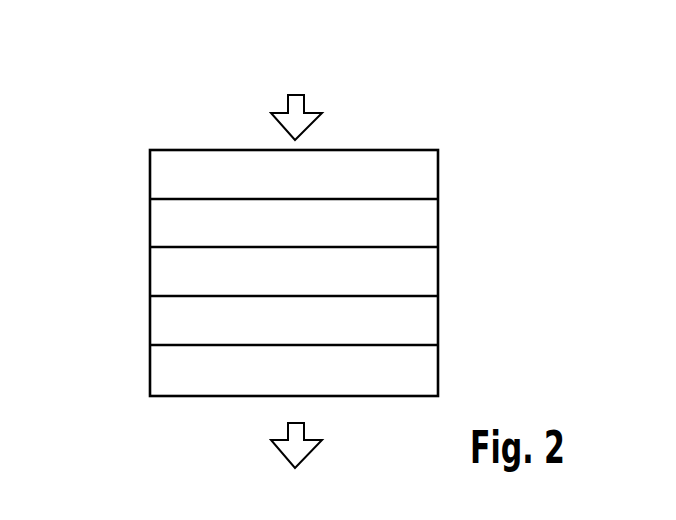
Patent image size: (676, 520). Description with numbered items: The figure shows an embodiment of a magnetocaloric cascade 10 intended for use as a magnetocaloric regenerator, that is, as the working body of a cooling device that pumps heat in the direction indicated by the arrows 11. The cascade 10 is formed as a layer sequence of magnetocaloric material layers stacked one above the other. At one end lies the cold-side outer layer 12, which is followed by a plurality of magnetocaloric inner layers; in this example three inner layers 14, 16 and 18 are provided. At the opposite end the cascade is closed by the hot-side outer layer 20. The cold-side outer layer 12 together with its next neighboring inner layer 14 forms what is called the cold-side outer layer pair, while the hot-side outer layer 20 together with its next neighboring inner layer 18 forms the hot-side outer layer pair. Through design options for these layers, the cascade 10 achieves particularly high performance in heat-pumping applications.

The magnetocaloric cascade 10 is at (438, 126).
The arrows 11 is at (304, 104).
The cold-side outer layer 12 is at (150, 174).
The inner layer 14 is at (150, 224).
The inner layer 16 is at (150, 276).
The inner layer 18 is at (150, 330).
The hot-side outer layer 20 is at (150, 377).